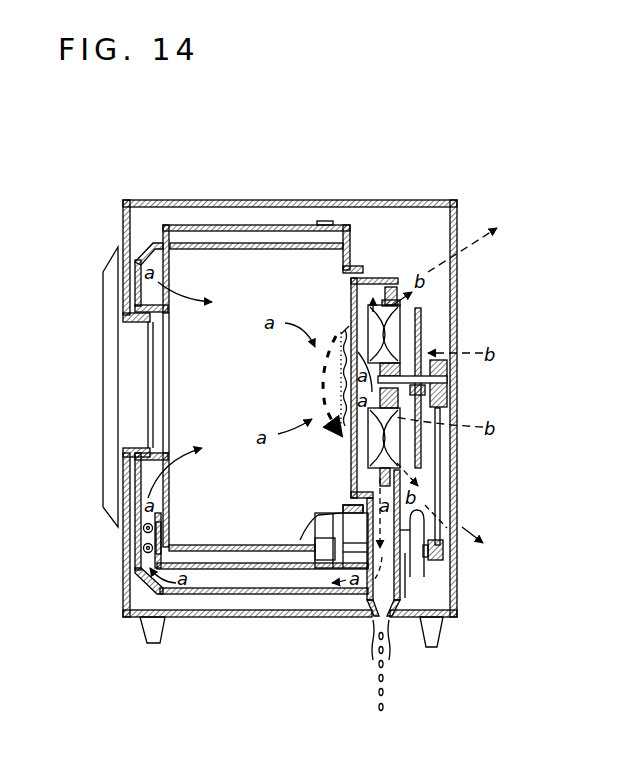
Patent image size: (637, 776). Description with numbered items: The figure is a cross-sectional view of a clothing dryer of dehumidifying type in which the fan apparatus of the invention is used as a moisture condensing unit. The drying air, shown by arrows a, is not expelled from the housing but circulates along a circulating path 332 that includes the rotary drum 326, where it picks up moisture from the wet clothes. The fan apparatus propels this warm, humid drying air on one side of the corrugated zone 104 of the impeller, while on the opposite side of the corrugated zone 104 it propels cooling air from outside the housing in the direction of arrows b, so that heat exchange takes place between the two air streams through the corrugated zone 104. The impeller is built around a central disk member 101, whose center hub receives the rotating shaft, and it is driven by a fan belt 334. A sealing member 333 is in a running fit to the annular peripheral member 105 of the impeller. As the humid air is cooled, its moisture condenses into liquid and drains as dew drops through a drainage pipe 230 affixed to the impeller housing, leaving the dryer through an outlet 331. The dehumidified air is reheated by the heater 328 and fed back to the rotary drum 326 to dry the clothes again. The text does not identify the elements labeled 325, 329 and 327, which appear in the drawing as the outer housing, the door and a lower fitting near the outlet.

The outer cabinet 325 is at (250, 203).
The rotary drum 326 is at (188, 255).
The annular peripheral member 105 is at (380, 298).
The sealing member 333 is at (388, 285).
The corrugated zone 104 is at (393, 335).
The central disk member 101 is at (447, 382).
The fan belt 334 is at (440, 478).
The drainage pipe 230 is at (398, 532).
The door 329 is at (108, 406).
The heater 328 is at (146, 528).
The circulating path 332 is at (237, 582).
The outlet 331 is at (372, 614).
The cup 327 is at (403, 583).